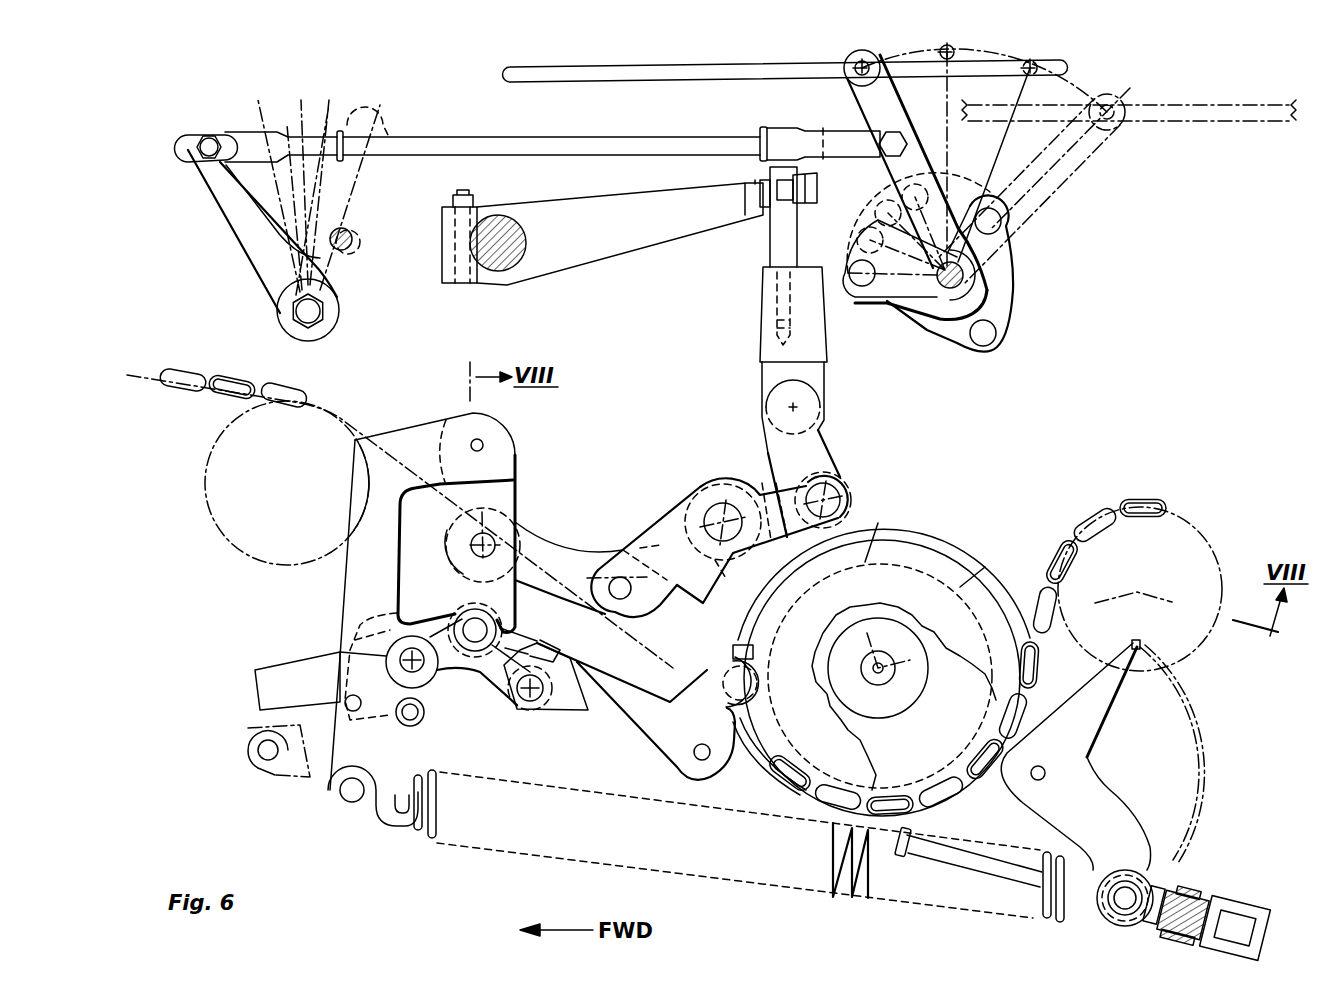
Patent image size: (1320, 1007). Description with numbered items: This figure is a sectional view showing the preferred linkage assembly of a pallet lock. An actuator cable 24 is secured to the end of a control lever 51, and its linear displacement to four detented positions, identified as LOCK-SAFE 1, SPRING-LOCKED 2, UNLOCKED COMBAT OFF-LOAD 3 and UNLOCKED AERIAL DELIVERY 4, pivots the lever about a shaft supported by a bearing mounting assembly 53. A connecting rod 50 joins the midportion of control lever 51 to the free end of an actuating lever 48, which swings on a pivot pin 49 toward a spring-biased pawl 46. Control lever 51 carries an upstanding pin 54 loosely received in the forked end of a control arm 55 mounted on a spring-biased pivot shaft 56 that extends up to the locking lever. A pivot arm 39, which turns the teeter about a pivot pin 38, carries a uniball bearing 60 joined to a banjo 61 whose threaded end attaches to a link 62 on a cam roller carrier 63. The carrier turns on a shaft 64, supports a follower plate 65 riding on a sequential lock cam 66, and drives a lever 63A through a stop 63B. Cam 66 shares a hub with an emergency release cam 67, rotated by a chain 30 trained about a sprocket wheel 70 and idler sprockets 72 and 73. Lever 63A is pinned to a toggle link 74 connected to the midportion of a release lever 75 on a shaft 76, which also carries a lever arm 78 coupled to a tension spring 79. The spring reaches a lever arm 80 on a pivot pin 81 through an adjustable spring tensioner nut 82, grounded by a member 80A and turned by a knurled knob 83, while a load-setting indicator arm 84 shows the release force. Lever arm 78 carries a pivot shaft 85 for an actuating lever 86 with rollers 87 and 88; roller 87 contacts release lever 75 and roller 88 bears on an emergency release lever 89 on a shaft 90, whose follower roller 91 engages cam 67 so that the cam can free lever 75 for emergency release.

The LOCK-SAFE position 1 is at (197, 130).
The SPRING-LOCKED position 2 is at (862, 241).
The UNLOCKED, COMBAT OFF-LOAD position 3 is at (1041, 42).
The UNLOCKED, AERIAL DELIVERY position 4 is at (1129, 88).
The actuator cable 24 is at (700, 75).
The chain 30 is at (200, 370).
The pivot pin 38 is at (518, 242).
The pivot arm 39 is at (631, 247).
The spring-biased pawl 46 is at (350, 223).
The actuating lever 48 is at (216, 190).
The pivot pin 49 is at (314, 310).
The connecting rod 50 is at (577, 143).
The control lever 51 is at (856, 102).
The bearing mounting assembly 53 is at (1012, 268).
The upstanding pin 54 is at (858, 262).
The control arm 55 is at (920, 292).
The pivot shaft 56 is at (988, 288).
The uniball bearing 60 is at (747, 190).
The banjo 61 is at (769, 247).
The link 62 is at (806, 370).
The cam roller carrier 63 is at (812, 447).
The lever 63A is at (665, 535).
The stop 63B is at (703, 605).
The shaft 64 is at (722, 505).
The follower plate 65 is at (846, 484).
The sequential lock cam 66 is at (952, 543).
The emergency release cam 67 is at (983, 568).
The sprocket wheel 70 is at (972, 677).
The idler sprocket 72 is at (1193, 527).
The idler sprocket 73 is at (208, 453).
The toggle link 74 is at (533, 543).
The release lever 75 is at (504, 490).
The shaft 76 is at (485, 446).
The lever arm 78 is at (352, 493).
The tension spring 79 is at (430, 842).
The lever arm 80 is at (1113, 797).
The member 80A is at (1196, 886).
The pivot pin 81 is at (1045, 771).
The adjustable spring tensioner nut 82 is at (1136, 917).
The knurled knob 83 is at (1249, 904).
The load-setting indicator arm 84 is at (1110, 703).
The pivot shaft 85 is at (420, 670).
The actuating lever 86 is at (520, 650).
The roller 87 is at (467, 607).
The roller 88 is at (520, 712).
The emergency release lever 89 is at (632, 722).
The shaft 90 is at (694, 754).
The follower roller 91 is at (733, 642).